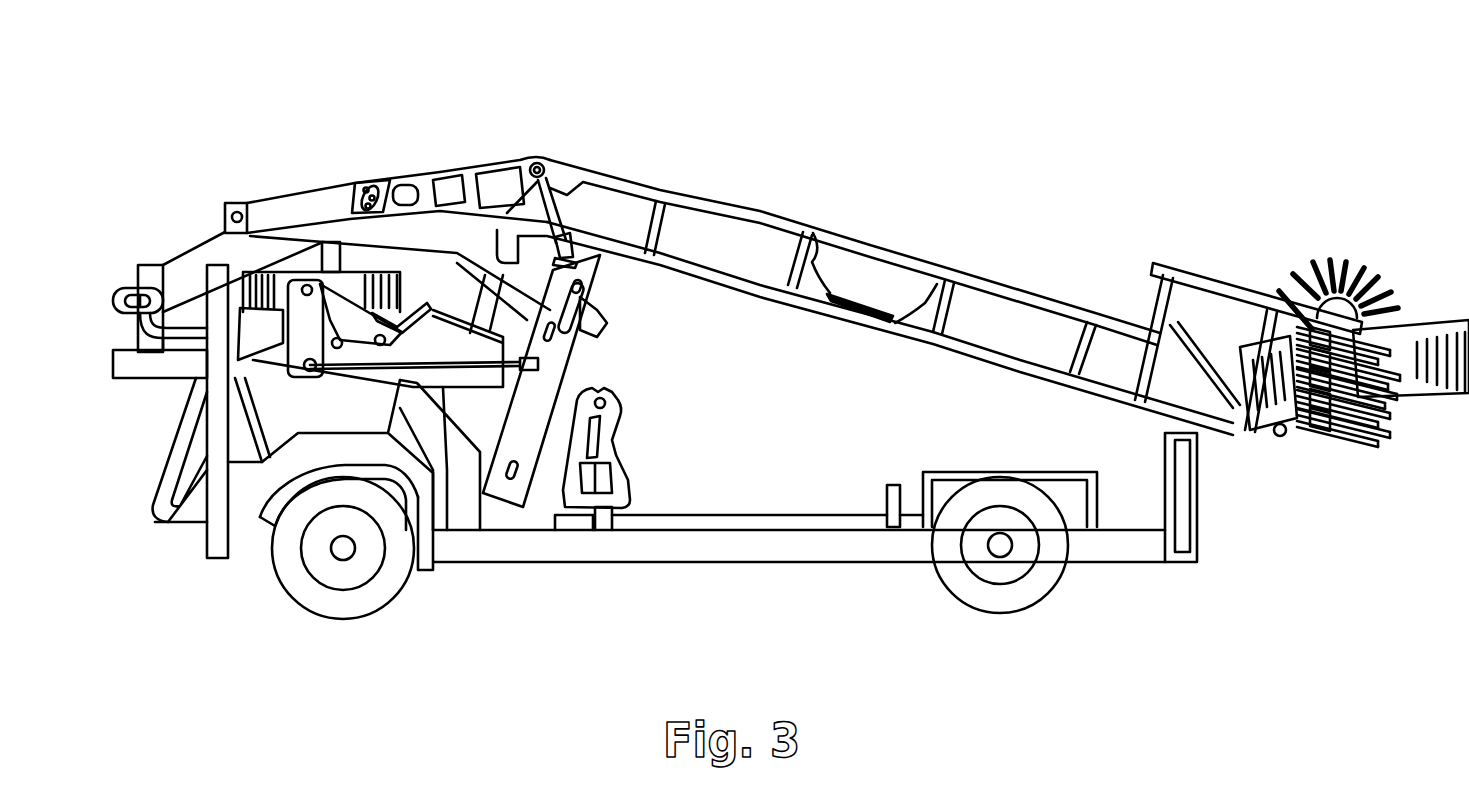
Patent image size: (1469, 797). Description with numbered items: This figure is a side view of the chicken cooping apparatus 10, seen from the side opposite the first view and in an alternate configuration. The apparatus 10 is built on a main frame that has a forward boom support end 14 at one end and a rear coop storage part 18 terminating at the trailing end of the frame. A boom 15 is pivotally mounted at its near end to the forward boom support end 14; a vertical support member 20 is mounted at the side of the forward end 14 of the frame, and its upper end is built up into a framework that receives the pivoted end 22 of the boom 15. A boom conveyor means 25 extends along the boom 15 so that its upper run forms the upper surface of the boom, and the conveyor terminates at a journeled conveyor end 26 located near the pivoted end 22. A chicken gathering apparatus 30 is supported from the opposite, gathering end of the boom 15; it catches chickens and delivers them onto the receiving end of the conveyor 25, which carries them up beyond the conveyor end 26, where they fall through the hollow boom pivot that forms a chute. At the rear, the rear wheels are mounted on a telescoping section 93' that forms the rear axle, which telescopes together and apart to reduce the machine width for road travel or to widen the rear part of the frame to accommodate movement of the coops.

The chicken cooping apparatus 10 is at (1112, 125).
The forward boom support end 14 is at (215, 570).
The boom 15 is at (930, 248).
The rear coop storage part 18 is at (1205, 570).
The support member 20 is at (210, 537).
The pivoted end of the boom 22 is at (372, 160).
The boom conveyor means 25 is at (860, 290).
The journeled conveyor end 26 is at (767, 563).
The chicken gathering apparatus 30 is at (1372, 262).
The telescoping section 93' is at (1026, 557).